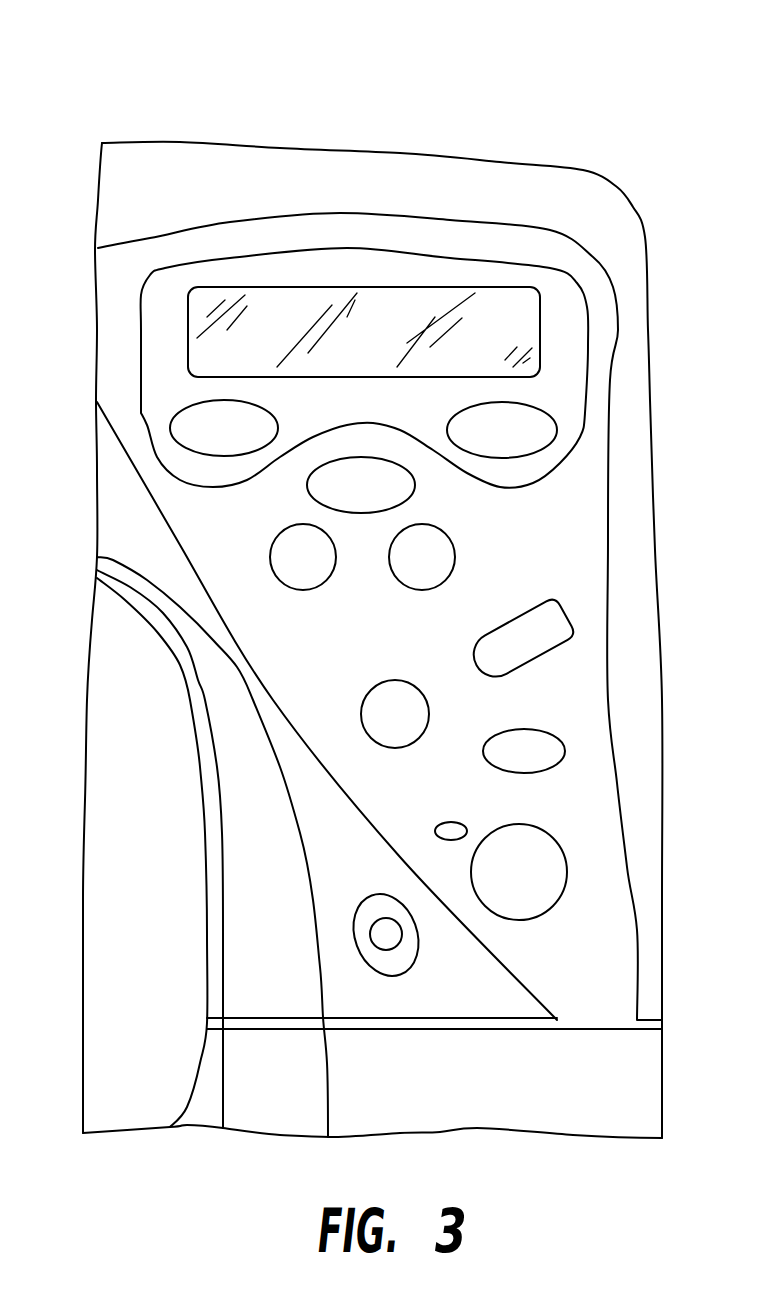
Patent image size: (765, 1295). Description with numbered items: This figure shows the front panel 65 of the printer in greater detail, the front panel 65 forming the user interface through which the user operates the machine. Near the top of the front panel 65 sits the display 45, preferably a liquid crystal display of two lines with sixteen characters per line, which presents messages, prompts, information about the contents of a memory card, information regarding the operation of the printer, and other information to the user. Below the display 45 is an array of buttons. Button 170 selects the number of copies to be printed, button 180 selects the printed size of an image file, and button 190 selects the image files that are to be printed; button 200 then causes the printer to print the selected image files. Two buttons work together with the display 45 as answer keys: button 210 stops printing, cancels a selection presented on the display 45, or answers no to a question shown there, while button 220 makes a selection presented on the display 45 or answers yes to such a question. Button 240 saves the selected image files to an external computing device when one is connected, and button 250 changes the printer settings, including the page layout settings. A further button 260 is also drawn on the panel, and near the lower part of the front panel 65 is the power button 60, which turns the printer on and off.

The front panel 65 is at (602, 117).
The display 45 is at (403, 300).
The button 170 is at (198, 427).
The button 180 is at (535, 430).
The button 190 is at (373, 487).
The button 200 is at (548, 627).
The button 210 is at (302, 560).
The button 220 is at (428, 560).
The button 240 is at (393, 712).
The button 250 is at (527, 752).
The button 260 is at (525, 875).
The power button 60 is at (388, 935).